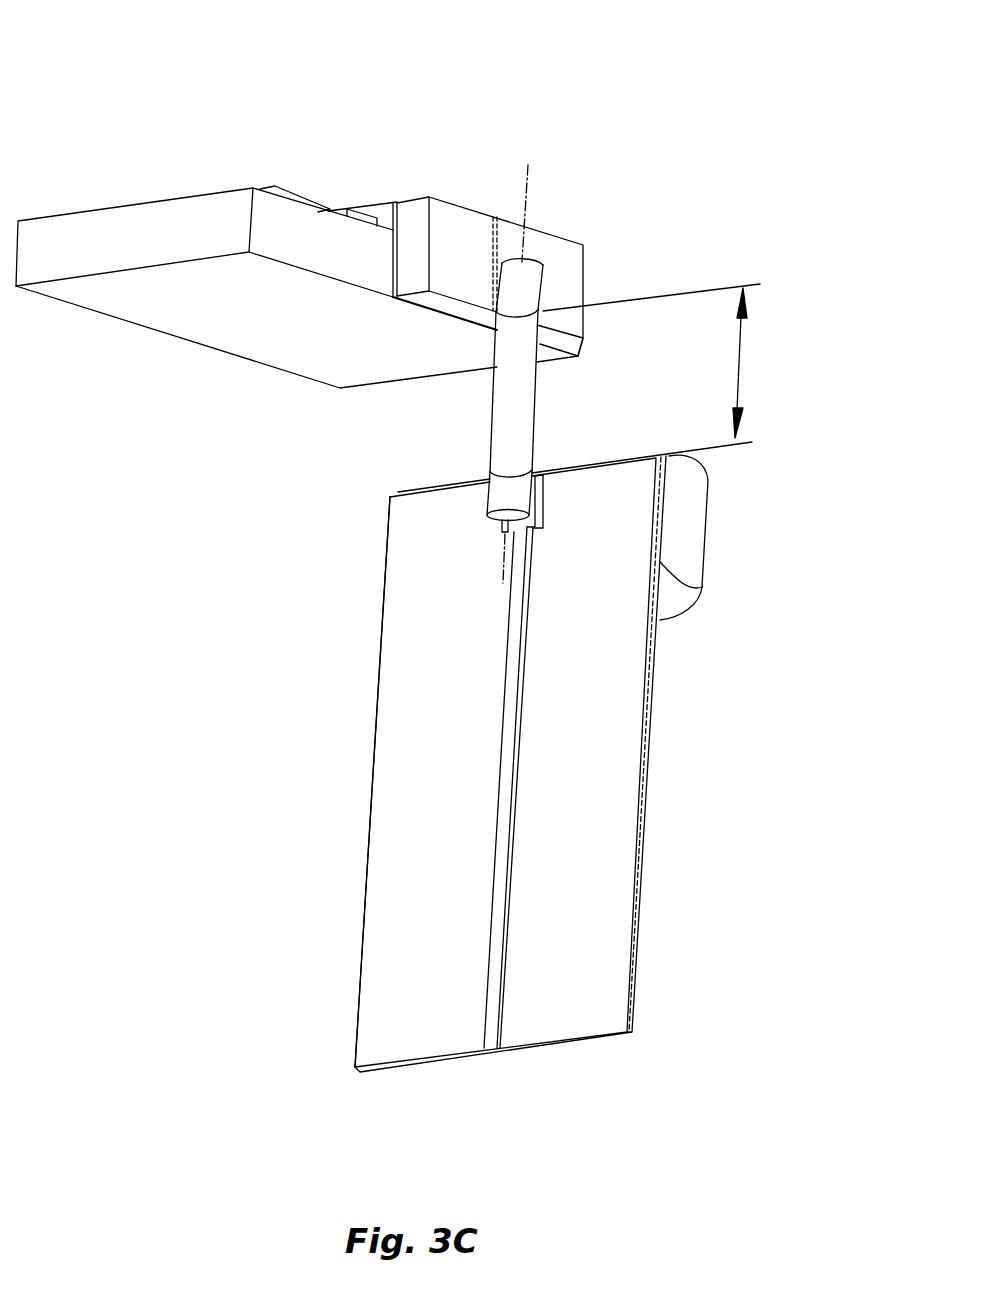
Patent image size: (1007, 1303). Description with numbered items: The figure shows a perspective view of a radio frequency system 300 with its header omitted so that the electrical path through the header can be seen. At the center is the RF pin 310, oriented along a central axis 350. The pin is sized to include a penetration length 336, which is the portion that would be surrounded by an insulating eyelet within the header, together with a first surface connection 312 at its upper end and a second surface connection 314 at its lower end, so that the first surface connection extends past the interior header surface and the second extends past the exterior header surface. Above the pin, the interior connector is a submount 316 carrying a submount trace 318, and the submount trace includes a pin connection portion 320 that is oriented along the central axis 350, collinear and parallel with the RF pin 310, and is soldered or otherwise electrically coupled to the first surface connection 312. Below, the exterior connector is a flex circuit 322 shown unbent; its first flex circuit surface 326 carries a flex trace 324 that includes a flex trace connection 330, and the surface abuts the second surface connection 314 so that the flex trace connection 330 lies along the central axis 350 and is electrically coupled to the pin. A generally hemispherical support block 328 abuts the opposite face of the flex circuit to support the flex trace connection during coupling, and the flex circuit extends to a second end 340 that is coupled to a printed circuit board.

The radio frequency system 300 is at (137, 57).
The RF pin 310 is at (532, 380).
The first surface connection 312 is at (532, 285).
The second surface connection 314 is at (495, 492).
The submount 316 is at (447, 222).
The submount trace 318 is at (505, 225).
The pin connection portion 320 is at (494, 296).
The flex circuit 322 is at (632, 975).
The flex trace 324 is at (514, 701).
The first flex circuit surface 326 is at (401, 782).
The support block 328 is at (690, 507).
The flex trace connection 330 is at (545, 497).
The penetration length 336 is at (742, 366).
The second end 340 is at (505, 1064).
The central axis 350 is at (528, 202).